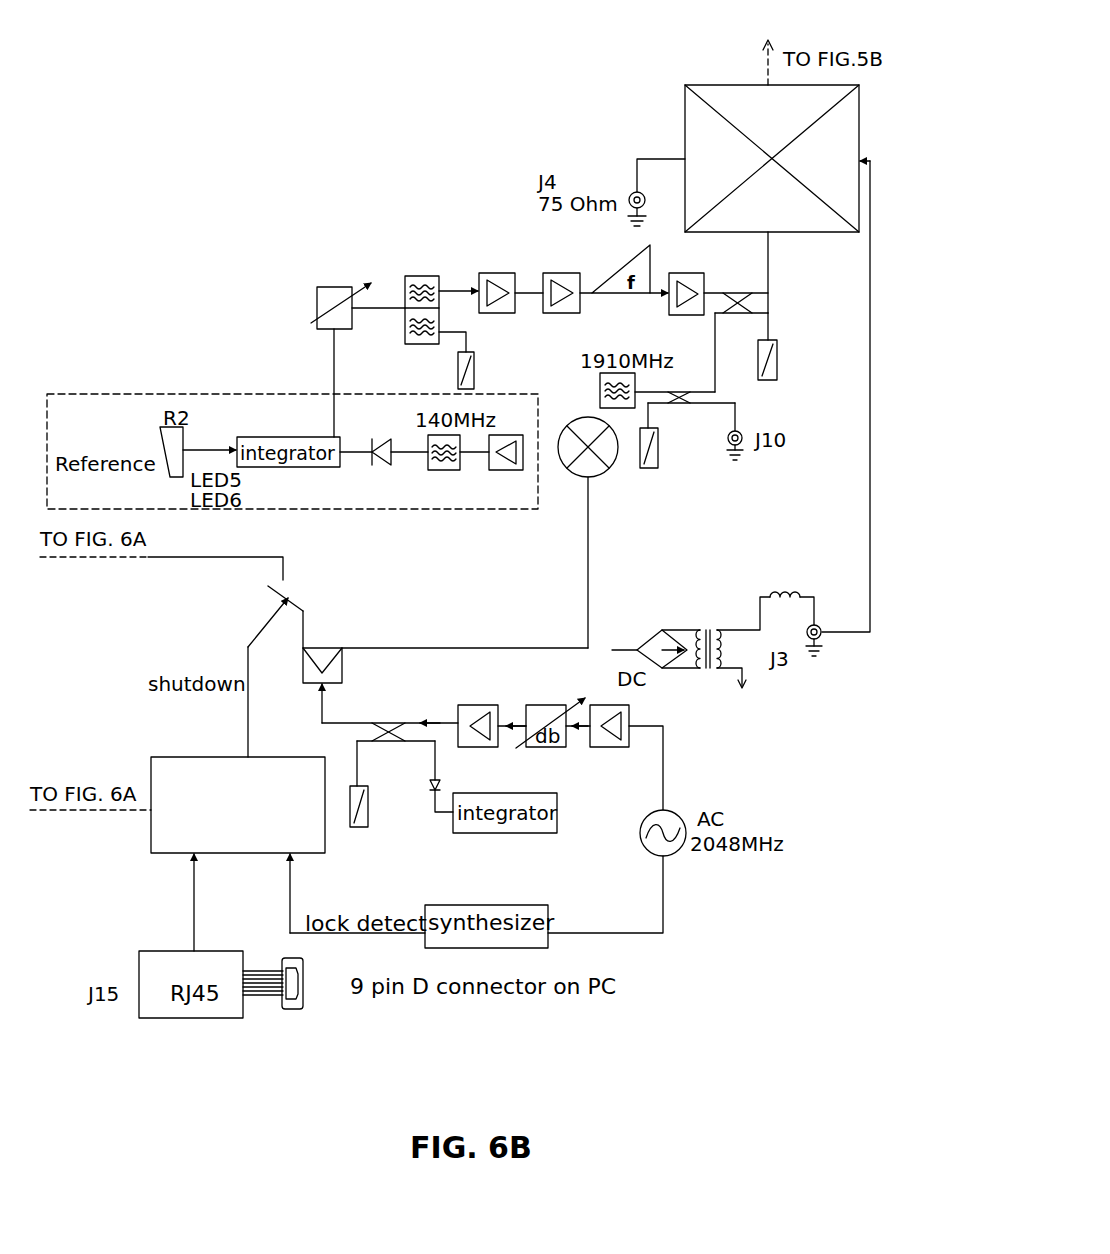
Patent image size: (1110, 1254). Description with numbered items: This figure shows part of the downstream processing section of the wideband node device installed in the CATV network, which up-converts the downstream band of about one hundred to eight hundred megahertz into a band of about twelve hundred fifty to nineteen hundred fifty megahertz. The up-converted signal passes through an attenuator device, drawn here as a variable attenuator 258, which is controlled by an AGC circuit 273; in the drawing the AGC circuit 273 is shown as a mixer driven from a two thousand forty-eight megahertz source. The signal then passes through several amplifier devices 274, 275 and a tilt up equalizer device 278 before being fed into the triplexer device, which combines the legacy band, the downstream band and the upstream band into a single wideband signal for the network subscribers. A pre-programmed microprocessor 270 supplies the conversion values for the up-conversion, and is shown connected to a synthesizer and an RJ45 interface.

The amplifier device 275 is at (726, 84).
The variable attenuator 258 is at (320, 286).
The amplifier device 274 is at (512, 250).
The tilt up equalizer device 278 is at (655, 262).
The AGC circuit 273 is at (538, 497).
The microprocessor 270 is at (165, 757).